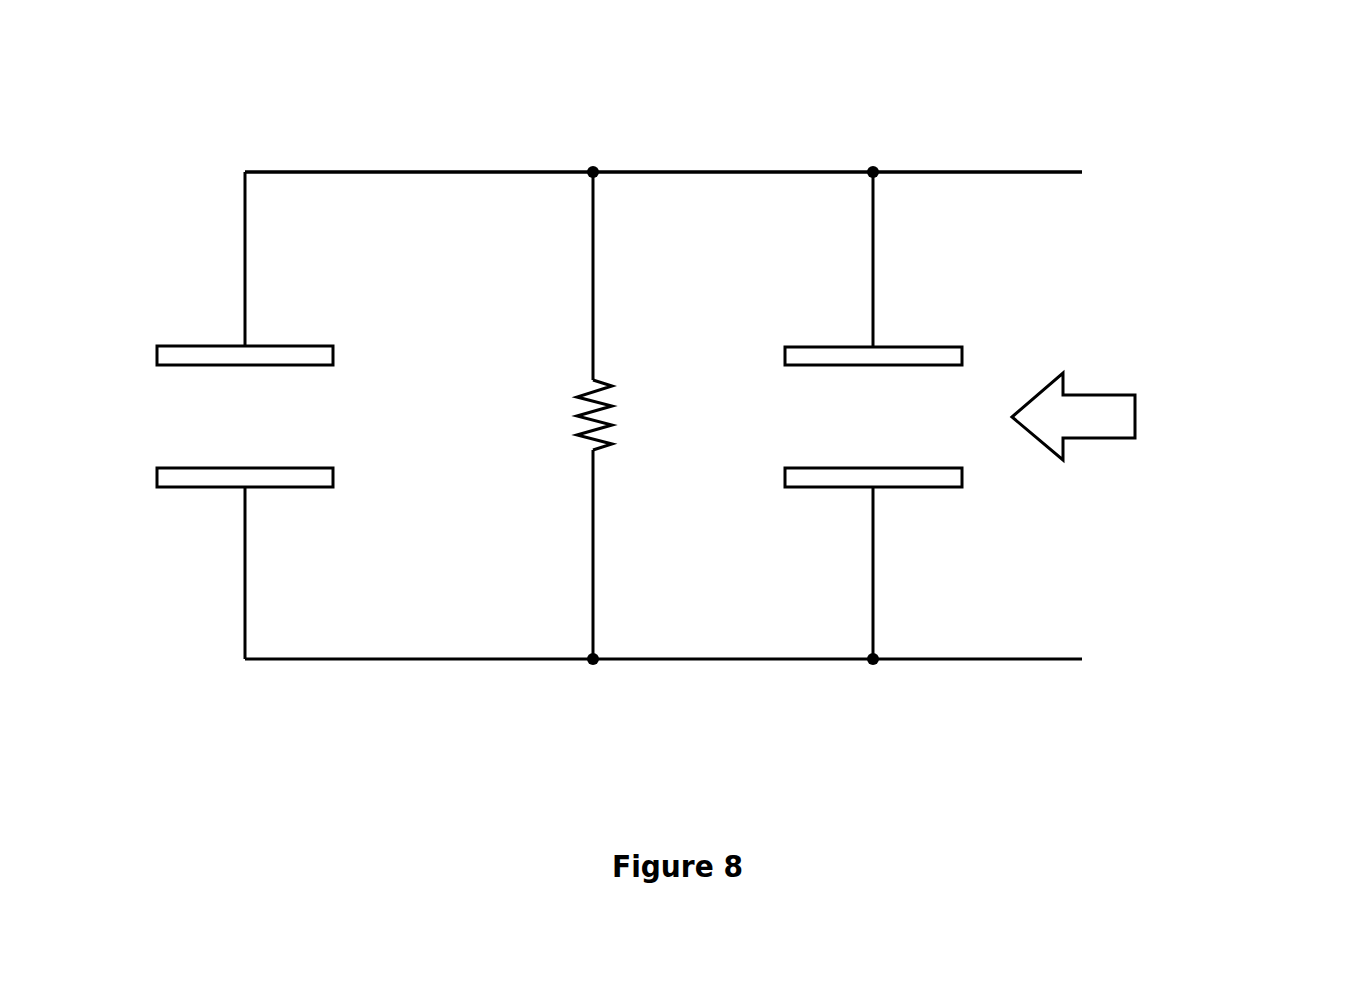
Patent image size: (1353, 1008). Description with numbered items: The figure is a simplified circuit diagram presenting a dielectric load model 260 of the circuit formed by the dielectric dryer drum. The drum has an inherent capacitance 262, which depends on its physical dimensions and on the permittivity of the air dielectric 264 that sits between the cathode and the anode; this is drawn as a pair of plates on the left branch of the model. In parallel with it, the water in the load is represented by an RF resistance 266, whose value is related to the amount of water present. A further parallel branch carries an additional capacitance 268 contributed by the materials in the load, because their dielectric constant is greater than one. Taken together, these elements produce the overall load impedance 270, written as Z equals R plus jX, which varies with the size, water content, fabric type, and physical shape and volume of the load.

The dielectric load model 260 is at (312, 140).
The inherent capacitance 262 is at (211, 346).
The air dielectric 264 is at (332, 452).
The RF resistance 266 is at (594, 255).
The additional capacitance 268 is at (907, 345).
The load impedance 270 is at (1112, 393).